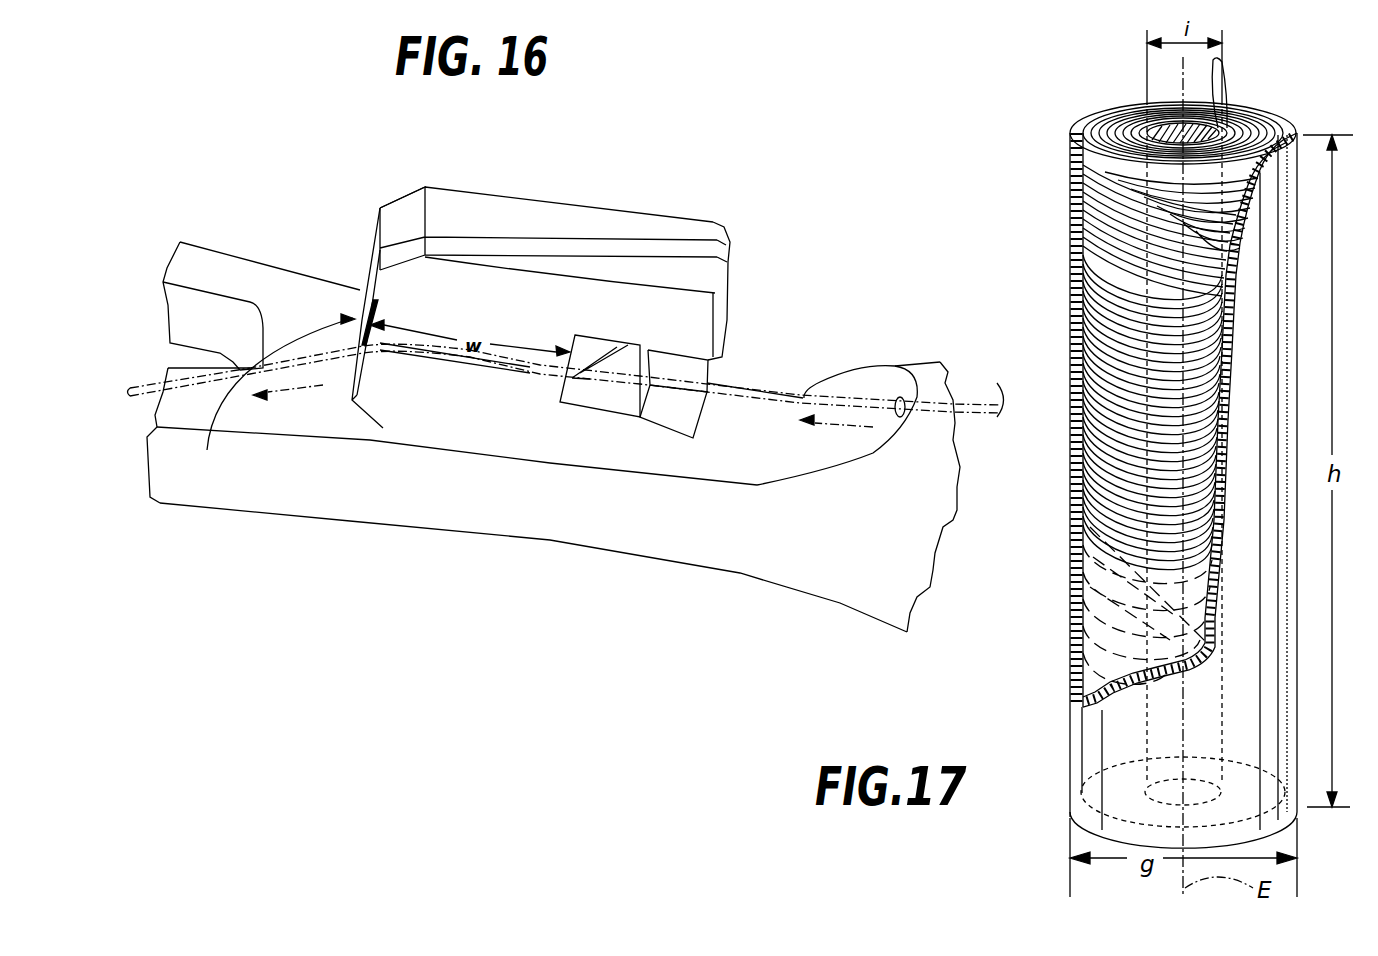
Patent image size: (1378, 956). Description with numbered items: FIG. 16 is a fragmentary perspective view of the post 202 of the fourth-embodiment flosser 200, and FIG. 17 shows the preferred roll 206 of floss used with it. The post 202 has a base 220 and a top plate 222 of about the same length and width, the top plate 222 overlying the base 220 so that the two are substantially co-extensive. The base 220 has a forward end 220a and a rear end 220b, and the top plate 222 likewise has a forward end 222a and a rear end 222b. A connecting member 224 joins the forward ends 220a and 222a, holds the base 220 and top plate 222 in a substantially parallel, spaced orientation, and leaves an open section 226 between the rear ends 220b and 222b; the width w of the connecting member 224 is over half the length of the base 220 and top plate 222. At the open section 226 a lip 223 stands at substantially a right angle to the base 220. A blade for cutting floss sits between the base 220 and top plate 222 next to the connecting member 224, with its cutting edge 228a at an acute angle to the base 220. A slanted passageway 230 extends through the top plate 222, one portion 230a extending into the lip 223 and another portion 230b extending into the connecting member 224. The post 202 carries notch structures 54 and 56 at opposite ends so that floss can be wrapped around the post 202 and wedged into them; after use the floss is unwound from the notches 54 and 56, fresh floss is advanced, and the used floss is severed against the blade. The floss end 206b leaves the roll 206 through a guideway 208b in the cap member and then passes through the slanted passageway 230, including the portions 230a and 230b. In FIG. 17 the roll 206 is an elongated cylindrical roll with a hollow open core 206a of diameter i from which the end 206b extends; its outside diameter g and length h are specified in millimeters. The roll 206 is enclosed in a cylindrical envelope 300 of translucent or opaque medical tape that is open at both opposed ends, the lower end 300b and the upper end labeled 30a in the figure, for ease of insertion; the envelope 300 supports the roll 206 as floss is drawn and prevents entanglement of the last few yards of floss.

In FIG. 16, the flosser 200 is at (360, 198).
In FIG. 16, the connecting member 224 is at (352, 290).
In FIG. 16, the top plate 222 is at (468, 213).
In FIG. 16, the forward end of top plate 222a is at (397, 205).
In FIG. 16, the rear end of top plate 222b is at (703, 229).
In FIG. 16, the slanted passageway 230 is at (492, 240).
In FIG. 16, the post 202 is at (633, 220).
In FIG. 16, the portion of slanted passageway 230a is at (672, 353).
In FIG. 16, the open section 226 is at (720, 367).
In FIG. 16, the guideway 208b is at (803, 398).
In FIG. 16, the portion of slanted passageway 230b is at (264, 397).
In FIG. 16, the forward end of base 220a is at (365, 388).
In FIG. 16, the notch structure 54 is at (357, 424).
In FIG. 16, the base 220 is at (565, 414).
In FIG. 16, the rear end of base 220b is at (673, 435).
In FIG. 16, the lip 223 is at (707, 397).
In FIG. 16, the cutting edge 228a is at (608, 367).
In FIG. 16, the notch structure 56 is at (625, 425).
In FIG. 17, the spring cable assembly 30a is at (1100, 103).
In FIG. 17, the hollow open core 206a is at (1163, 113).
In FIG. 17, the end of floss 206b is at (1228, 88).
In FIG. 17, the roll of floss 206 is at (1100, 600).
In FIG. 17, the cylindrical envelope 300 is at (1093, 737).
In FIG. 17, the end of envelope 300b is at (1063, 822).